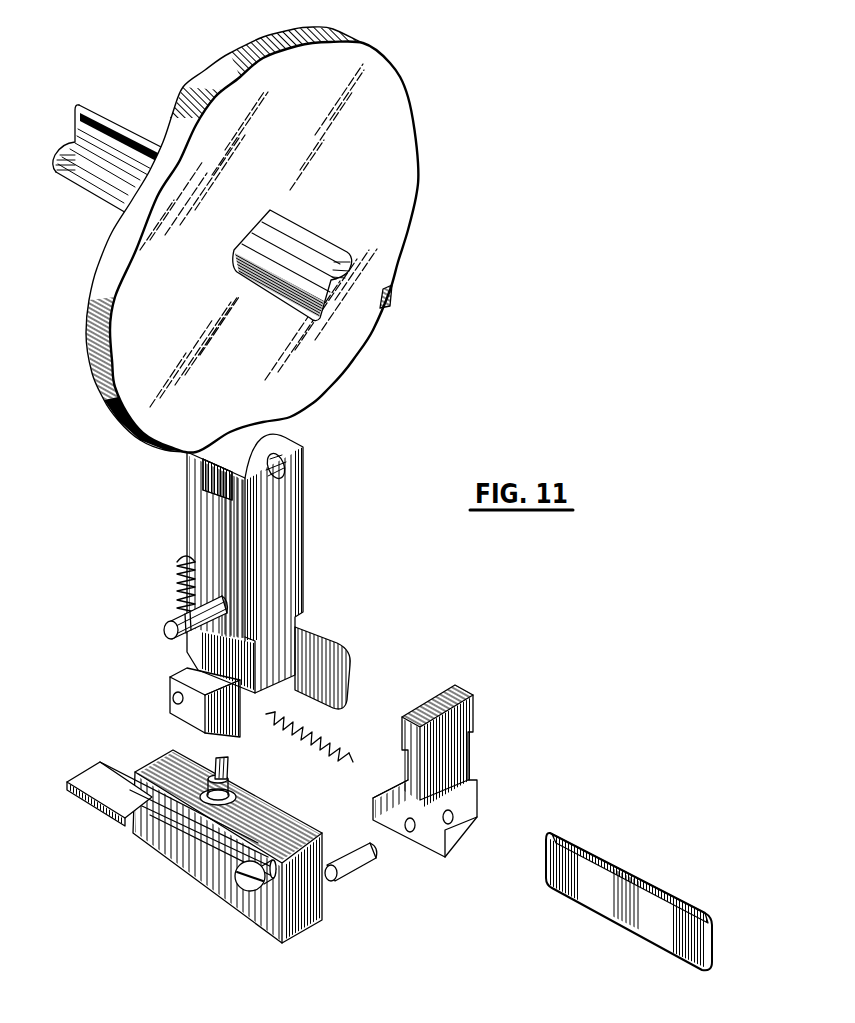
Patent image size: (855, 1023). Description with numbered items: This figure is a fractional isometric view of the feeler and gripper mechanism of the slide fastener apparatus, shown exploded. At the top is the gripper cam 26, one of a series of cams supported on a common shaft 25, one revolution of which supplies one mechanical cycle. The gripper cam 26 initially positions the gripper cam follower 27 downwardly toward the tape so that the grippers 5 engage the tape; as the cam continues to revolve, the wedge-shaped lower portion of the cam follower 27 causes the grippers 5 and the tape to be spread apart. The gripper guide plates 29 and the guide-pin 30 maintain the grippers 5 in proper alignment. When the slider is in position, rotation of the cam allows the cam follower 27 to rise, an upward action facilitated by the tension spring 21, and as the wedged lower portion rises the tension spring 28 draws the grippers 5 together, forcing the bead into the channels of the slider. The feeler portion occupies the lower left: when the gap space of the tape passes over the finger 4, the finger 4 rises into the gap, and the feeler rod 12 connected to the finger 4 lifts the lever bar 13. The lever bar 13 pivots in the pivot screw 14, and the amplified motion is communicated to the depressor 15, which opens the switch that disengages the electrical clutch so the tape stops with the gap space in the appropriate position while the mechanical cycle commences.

The finger 4 is at (229, 763).
The grippers 5 is at (200, 712).
The feeler rod 12 is at (166, 847).
The lever bar 13 is at (218, 836).
The pivot screw 14 is at (241, 882).
The depressor 15 is at (100, 808).
The tension spring 21 is at (178, 574).
The common shaft 25 is at (77, 180).
The gripper cam 26 is at (397, 163).
The gripper cam follower 27 is at (293, 550).
The tension spring 28 is at (315, 756).
The gripper guide plates 29 is at (317, 636).
The guide-pin 30 is at (356, 868).